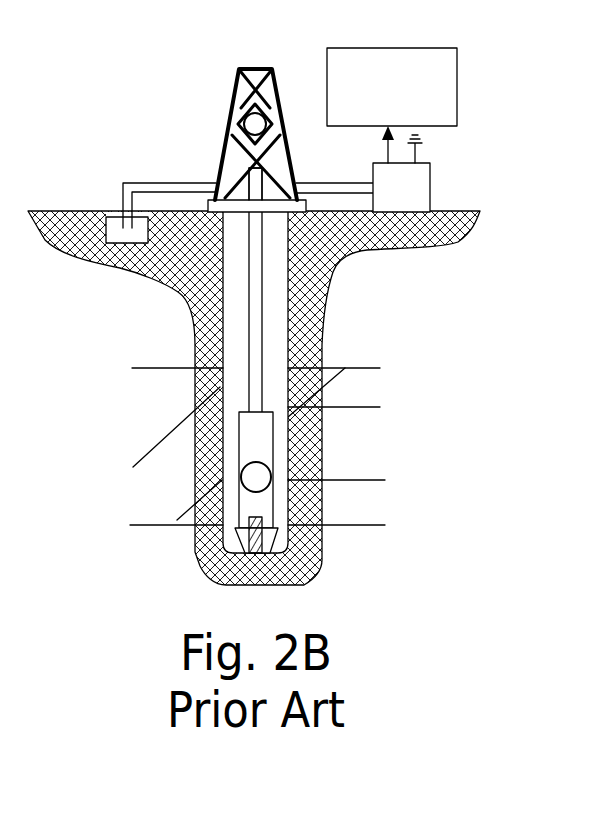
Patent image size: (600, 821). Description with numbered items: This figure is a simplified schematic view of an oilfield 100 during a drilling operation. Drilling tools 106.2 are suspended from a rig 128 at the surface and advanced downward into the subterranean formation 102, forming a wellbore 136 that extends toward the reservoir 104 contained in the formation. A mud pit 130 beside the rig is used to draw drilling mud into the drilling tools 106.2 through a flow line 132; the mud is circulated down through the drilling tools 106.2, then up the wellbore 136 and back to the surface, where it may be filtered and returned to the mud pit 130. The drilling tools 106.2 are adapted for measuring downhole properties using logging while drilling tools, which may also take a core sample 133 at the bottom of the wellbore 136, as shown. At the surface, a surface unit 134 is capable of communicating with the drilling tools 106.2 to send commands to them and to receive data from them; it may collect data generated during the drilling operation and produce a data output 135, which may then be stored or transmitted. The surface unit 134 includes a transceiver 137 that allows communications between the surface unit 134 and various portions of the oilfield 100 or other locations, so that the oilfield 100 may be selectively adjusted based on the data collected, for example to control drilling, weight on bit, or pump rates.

The oilfield 100 is at (140, 74).
The subterranean formation 102 is at (362, 349).
The reservoir 104 is at (410, 461).
The drilling tools 106.2 is at (240, 453).
The rig 128 is at (223, 141).
The mud pit 130 is at (127, 243).
The flow line 132 is at (122, 186).
The core sample 133 is at (248, 547).
The surface unit 134 is at (430, 188).
The data output 135 is at (427, 48).
The wellbore 136 is at (289, 268).
The transceiver 137 is at (417, 156).